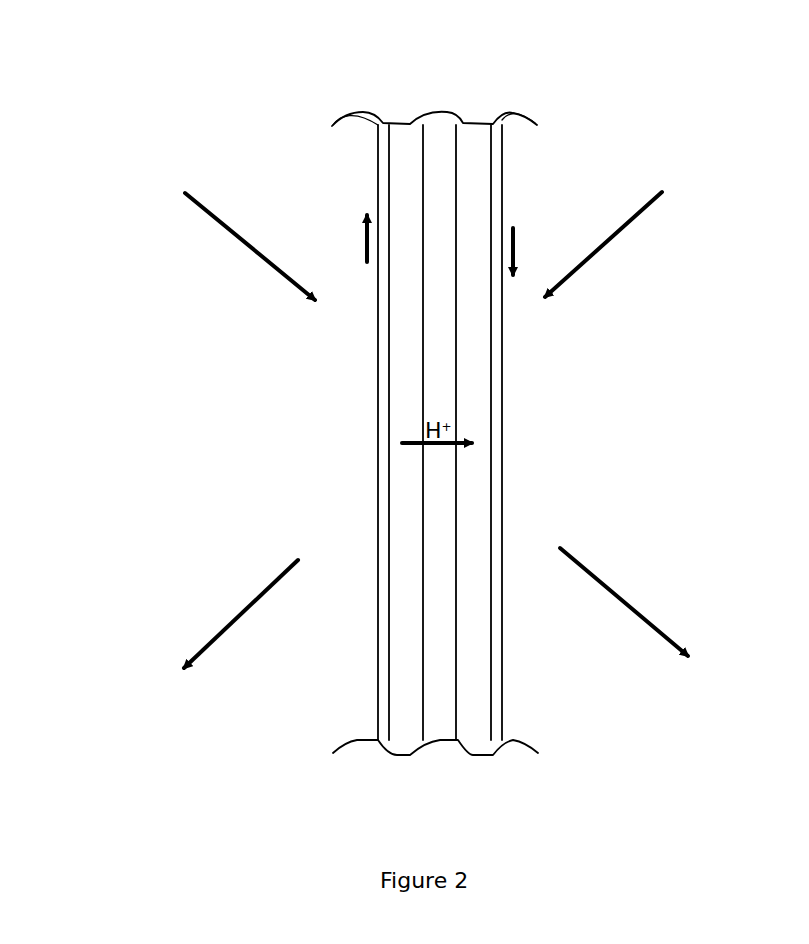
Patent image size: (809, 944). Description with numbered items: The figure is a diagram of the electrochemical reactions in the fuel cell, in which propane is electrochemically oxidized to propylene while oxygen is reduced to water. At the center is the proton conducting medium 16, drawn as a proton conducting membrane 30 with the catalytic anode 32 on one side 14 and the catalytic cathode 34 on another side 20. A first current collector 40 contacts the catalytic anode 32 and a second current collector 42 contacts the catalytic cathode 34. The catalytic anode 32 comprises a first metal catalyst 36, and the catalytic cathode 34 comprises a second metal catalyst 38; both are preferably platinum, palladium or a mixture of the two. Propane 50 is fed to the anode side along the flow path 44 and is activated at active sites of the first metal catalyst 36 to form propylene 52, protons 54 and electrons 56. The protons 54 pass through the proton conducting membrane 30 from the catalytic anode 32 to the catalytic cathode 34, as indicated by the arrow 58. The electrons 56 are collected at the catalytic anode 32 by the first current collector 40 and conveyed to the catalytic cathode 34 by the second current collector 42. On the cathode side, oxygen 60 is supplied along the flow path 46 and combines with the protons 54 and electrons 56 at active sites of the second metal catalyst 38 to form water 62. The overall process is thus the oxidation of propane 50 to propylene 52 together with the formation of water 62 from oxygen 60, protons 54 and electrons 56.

The one side 14 is at (390, 375).
The proton conducting medium 16 is at (290, 105).
The another side 20 is at (492, 397).
The proton conducting membrane 30 is at (447, 133).
The catalytic anode 32 is at (412, 145).
The catalytic cathode 34 is at (468, 147).
The first metal catalyst 36 is at (413, 410).
The second metal catalyst 38 is at (468, 419).
The first current collector 40 is at (378, 163).
The second current collector 42 is at (503, 147).
The fuel flow 44 is at (212, 213).
The oxidant flow 46 is at (615, 240).
The propane 50 is at (152, 205).
The propylene 52 is at (155, 698).
The protons 54 is at (435, 408).
The electrons 56 is at (355, 273).
The arrow 58 is at (435, 452).
The oxygen 60 is at (705, 198).
The water 62 is at (742, 683).